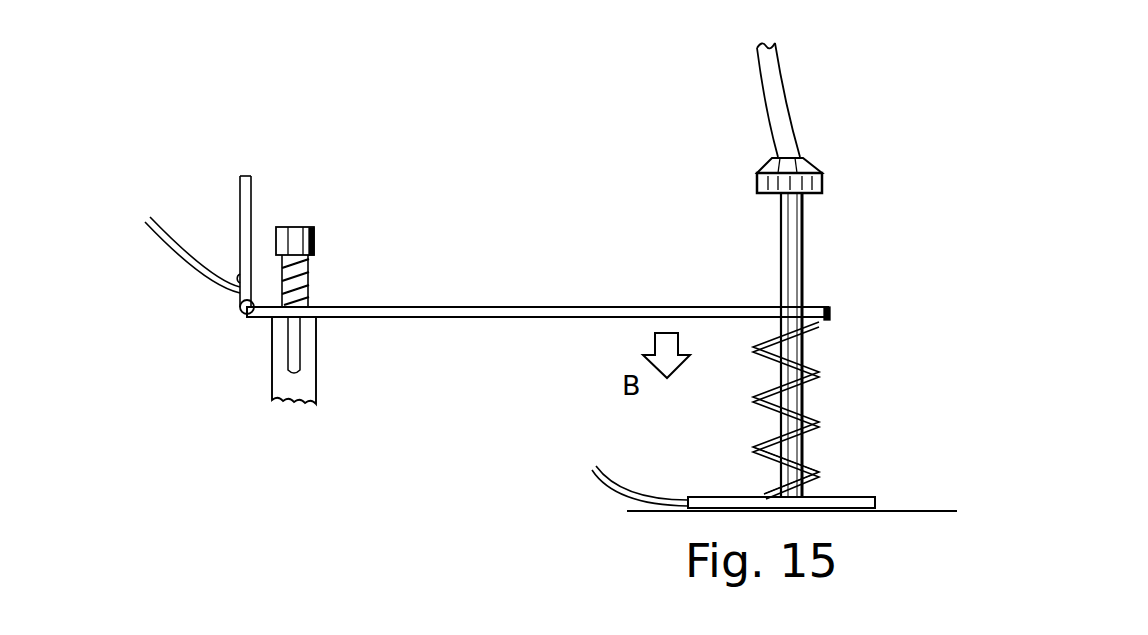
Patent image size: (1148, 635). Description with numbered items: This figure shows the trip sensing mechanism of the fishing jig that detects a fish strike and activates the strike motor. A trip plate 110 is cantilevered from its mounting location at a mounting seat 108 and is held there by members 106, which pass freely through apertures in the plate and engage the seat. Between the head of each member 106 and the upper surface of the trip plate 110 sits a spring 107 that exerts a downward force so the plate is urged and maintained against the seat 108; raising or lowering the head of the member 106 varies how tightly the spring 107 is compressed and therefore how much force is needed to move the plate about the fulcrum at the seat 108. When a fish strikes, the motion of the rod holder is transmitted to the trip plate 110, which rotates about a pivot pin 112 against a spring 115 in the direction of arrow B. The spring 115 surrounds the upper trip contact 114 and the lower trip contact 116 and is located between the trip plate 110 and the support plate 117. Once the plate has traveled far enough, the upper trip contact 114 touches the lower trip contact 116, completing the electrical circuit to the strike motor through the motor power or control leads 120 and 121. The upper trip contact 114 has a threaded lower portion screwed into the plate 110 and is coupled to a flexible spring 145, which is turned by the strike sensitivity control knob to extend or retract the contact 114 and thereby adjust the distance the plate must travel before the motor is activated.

The member 106 is at (313, 228).
The spring 107 is at (307, 280).
The mounting seat 108 is at (303, 385).
The trip plate 110 is at (447, 305).
The pivot pin 112 is at (243, 317).
The upper trip contact 114 is at (803, 270).
The spring 115 is at (818, 390).
The lower trip contact 116 is at (813, 463).
The support plate 117 is at (867, 495).
The motor power lead 120 is at (195, 277).
The motor power lead 121 is at (643, 490).
The flexible spring 145 is at (785, 112).